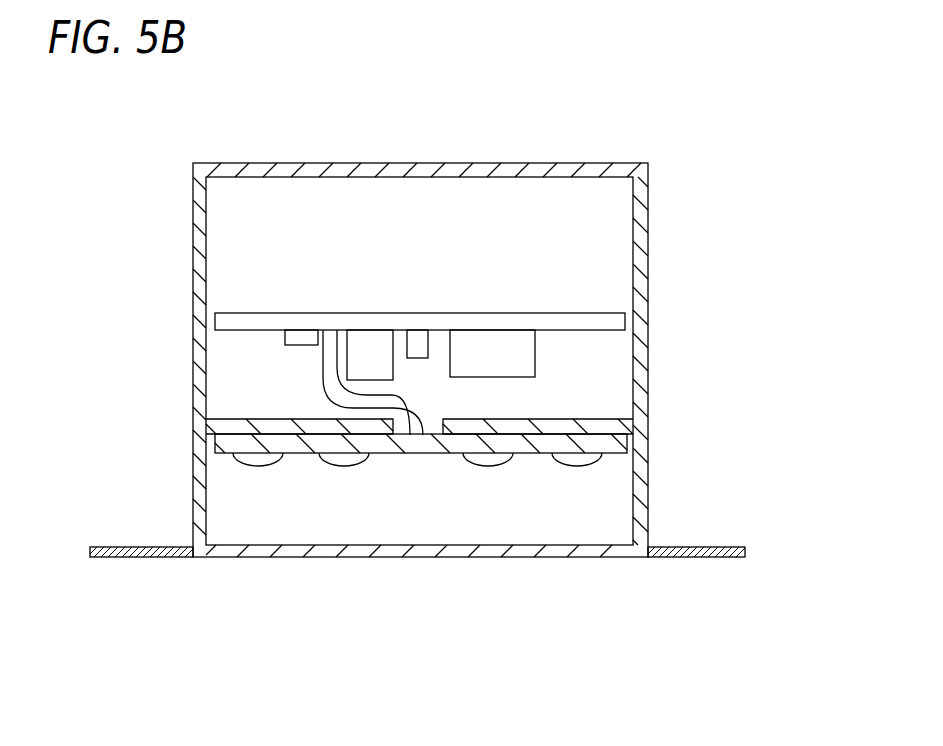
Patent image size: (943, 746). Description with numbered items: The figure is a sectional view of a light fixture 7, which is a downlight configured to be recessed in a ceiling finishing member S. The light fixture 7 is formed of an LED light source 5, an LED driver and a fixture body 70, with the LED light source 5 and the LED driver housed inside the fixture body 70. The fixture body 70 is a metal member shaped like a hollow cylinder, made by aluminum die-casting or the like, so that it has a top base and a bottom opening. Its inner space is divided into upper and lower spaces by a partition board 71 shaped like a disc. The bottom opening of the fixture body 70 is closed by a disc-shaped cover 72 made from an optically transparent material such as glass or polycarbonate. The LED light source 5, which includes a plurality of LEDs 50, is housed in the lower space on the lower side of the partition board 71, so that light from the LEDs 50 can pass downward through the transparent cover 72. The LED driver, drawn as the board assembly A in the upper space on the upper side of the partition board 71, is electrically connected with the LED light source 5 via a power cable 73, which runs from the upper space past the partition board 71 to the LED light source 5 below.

The light fixture 7 is at (530, 162).
The fixture body 70 is at (184, 220).
The partition board 71 is at (617, 427).
The cover 72 is at (454, 551).
The power cable 73 is at (322, 376).
The circuit board assembly A is at (614, 302).
The LED light source 5 is at (402, 476).
The LEDs 50 is at (533, 575).
The ceiling finishing member S is at (713, 559).